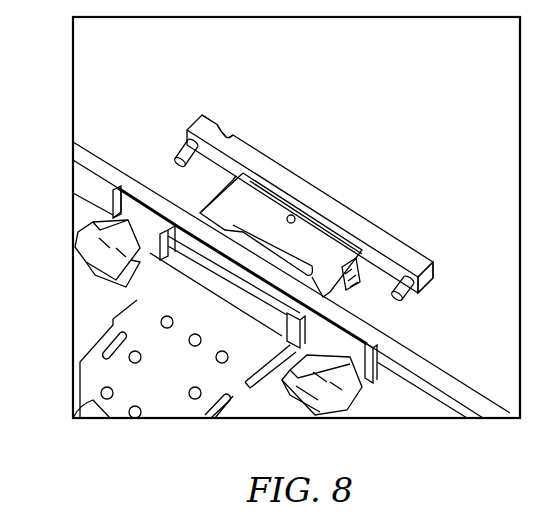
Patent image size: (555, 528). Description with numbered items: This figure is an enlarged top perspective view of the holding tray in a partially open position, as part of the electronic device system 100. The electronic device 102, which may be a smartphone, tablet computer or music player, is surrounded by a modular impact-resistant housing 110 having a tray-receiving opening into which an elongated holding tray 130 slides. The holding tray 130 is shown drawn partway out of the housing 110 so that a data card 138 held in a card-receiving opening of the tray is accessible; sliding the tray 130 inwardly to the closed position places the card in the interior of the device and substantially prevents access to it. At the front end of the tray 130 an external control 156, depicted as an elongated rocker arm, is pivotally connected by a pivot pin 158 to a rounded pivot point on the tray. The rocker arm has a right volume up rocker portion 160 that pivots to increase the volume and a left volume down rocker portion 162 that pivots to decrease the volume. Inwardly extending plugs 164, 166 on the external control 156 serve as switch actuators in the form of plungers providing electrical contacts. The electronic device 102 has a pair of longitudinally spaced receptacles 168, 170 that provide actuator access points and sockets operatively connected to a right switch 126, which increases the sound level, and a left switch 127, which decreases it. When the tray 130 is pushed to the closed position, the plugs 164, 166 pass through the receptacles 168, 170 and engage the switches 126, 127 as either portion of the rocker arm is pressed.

The electronic device system 100 is at (312, 207).
The electronic device 102 is at (404, 405).
The modular impact-resistant housing 110 is at (350, 323).
The right switch 126 is at (82, 238).
The left switch 127 is at (352, 388).
The elongated holding tray 130 is at (291, 222).
The data card 138 is at (296, 257).
The external control 156 is at (229, 137).
The pivot pin 158 is at (294, 215).
The right volume up rocker portion 160 is at (205, 118).
The left volume down rocker portion 162 is at (425, 256).
The plug 164 is at (185, 150).
The plug 166 is at (413, 290).
The receptacle 168 is at (114, 230).
The receptacle 170 is at (318, 378).